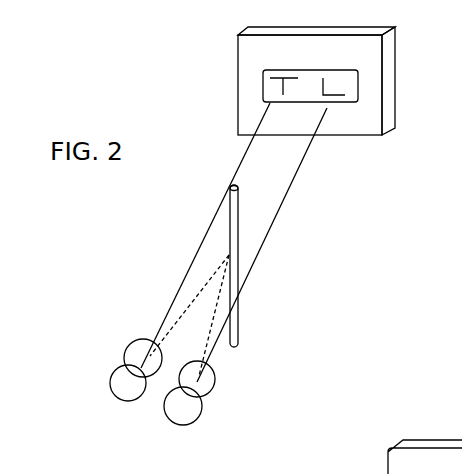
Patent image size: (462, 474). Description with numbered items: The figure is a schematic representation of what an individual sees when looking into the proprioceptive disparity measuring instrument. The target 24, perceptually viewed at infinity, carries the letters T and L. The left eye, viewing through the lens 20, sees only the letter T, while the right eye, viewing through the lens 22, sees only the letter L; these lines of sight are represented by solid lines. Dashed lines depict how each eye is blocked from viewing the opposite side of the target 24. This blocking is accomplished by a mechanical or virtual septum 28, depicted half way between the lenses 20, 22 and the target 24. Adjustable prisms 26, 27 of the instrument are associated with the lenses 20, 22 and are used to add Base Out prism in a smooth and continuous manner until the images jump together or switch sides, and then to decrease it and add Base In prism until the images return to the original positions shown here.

The lens 20 is at (125, 398).
The lens 22 is at (193, 422).
The target 24 is at (392, 80).
The adjustable prism 26 is at (133, 348).
The adjustable prism 27 is at (213, 383).
The septum 28 is at (238, 333).